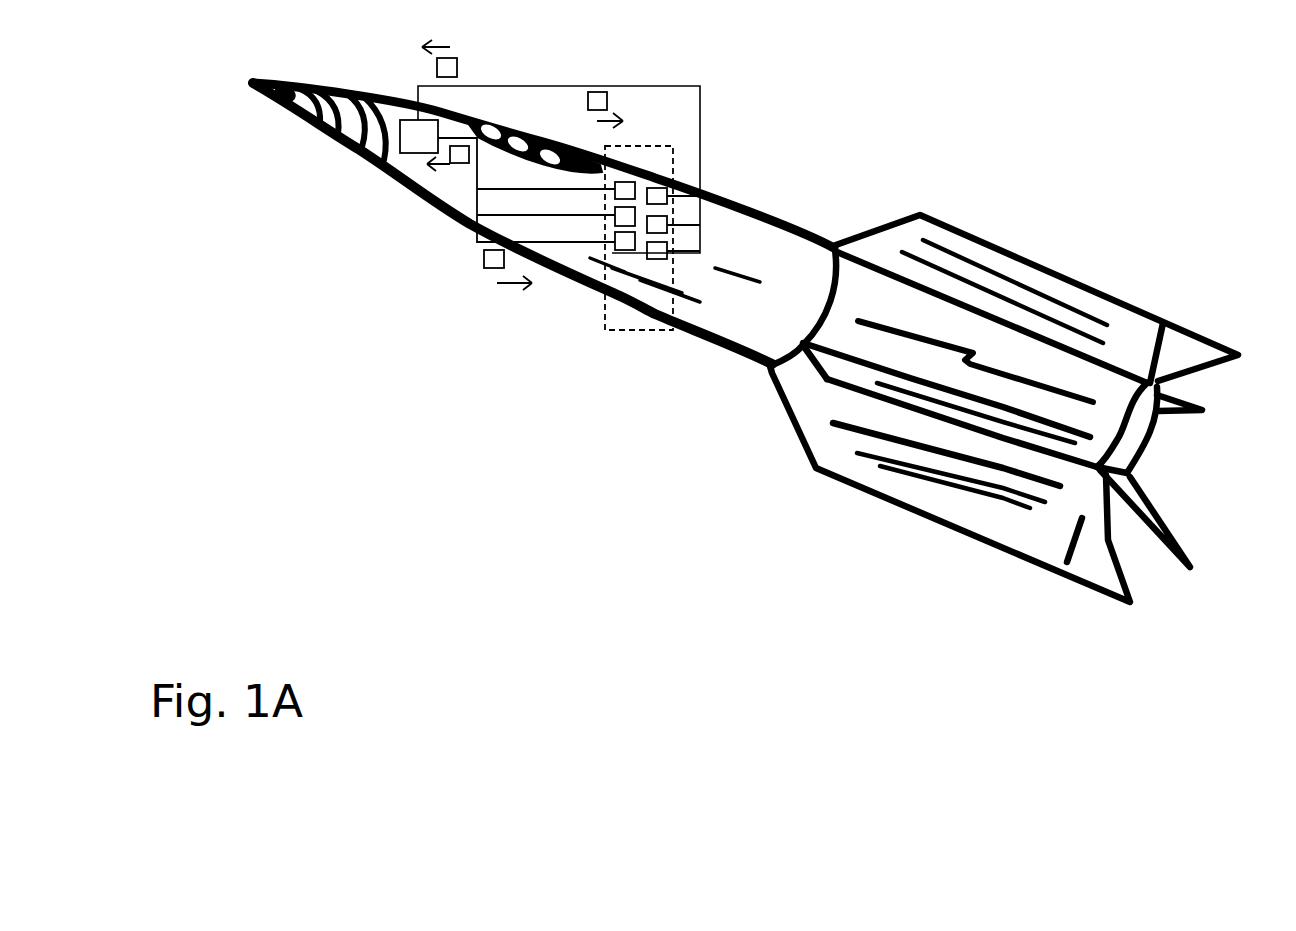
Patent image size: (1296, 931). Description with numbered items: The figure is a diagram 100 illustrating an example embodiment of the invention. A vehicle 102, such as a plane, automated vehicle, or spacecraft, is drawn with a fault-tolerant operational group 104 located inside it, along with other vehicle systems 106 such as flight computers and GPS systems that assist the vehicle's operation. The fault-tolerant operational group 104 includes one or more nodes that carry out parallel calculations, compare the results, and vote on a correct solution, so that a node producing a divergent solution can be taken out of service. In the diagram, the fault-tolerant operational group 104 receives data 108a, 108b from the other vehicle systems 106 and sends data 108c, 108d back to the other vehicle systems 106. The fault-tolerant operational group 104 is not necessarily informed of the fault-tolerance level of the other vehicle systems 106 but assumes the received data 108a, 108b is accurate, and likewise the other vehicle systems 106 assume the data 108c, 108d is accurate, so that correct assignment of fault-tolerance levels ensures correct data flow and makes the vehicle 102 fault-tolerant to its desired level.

The diagram 100 is at (658, 772).
The vehicle 102 is at (300, 128).
The fault-tolerant operational group 104 is at (402, 155).
The other vehicle systems 106 is at (640, 146).
The data 108a is at (456, 66).
The data 108b is at (455, 163).
The data 108c is at (493, 270).
The data 108d is at (607, 102).